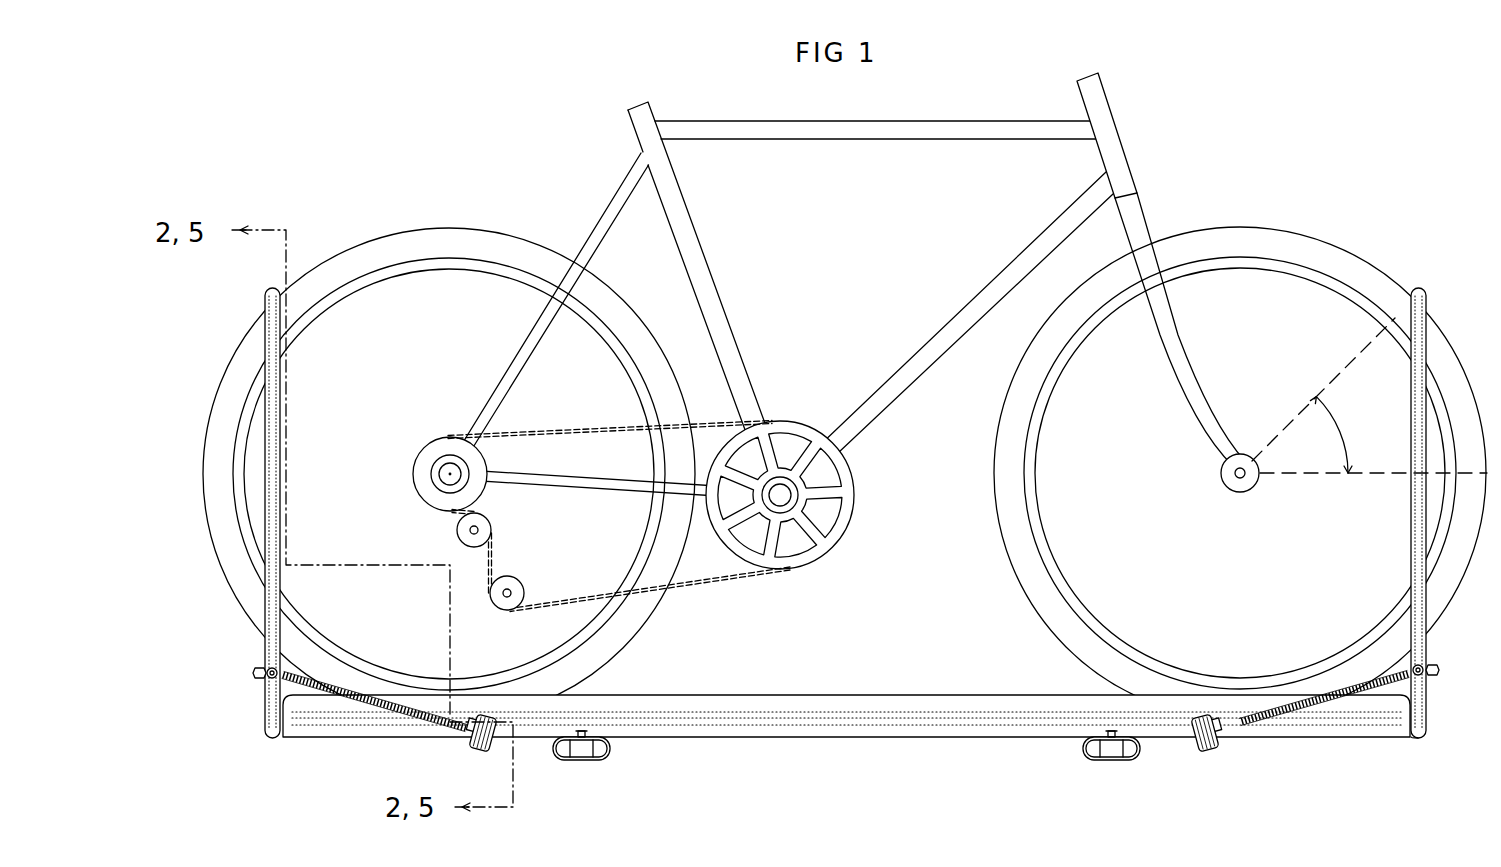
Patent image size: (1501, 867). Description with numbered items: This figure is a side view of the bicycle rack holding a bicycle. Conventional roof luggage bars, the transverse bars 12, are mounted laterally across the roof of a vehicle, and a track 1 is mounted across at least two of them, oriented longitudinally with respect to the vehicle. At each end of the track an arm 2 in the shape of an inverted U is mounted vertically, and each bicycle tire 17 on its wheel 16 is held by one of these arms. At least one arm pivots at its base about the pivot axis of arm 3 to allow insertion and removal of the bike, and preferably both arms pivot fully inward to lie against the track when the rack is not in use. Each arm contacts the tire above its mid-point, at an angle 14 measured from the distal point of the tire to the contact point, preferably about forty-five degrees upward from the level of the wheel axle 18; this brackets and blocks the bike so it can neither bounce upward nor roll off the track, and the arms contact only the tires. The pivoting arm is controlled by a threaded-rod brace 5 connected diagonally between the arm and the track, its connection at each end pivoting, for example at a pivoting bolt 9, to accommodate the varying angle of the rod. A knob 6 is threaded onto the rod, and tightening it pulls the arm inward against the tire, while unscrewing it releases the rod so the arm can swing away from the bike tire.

The track 1 is at (850, 694).
The arm 2 is at (1410, 524).
The pivot axis of arm 3 is at (1417, 733).
The threaded-rod brace for pivoting arm 5 is at (1367, 682).
The knob 6 is at (1207, 749).
The pivoting bolt 9 is at (1424, 676).
The transverse bar 12 is at (1095, 757).
The angle from distal point of tire to contact point of arm on tire 14 is at (1336, 441).
The wheel 16 is at (1053, 560).
The tire 17 is at (438, 238).
The wheel axle 18 is at (1233, 478).